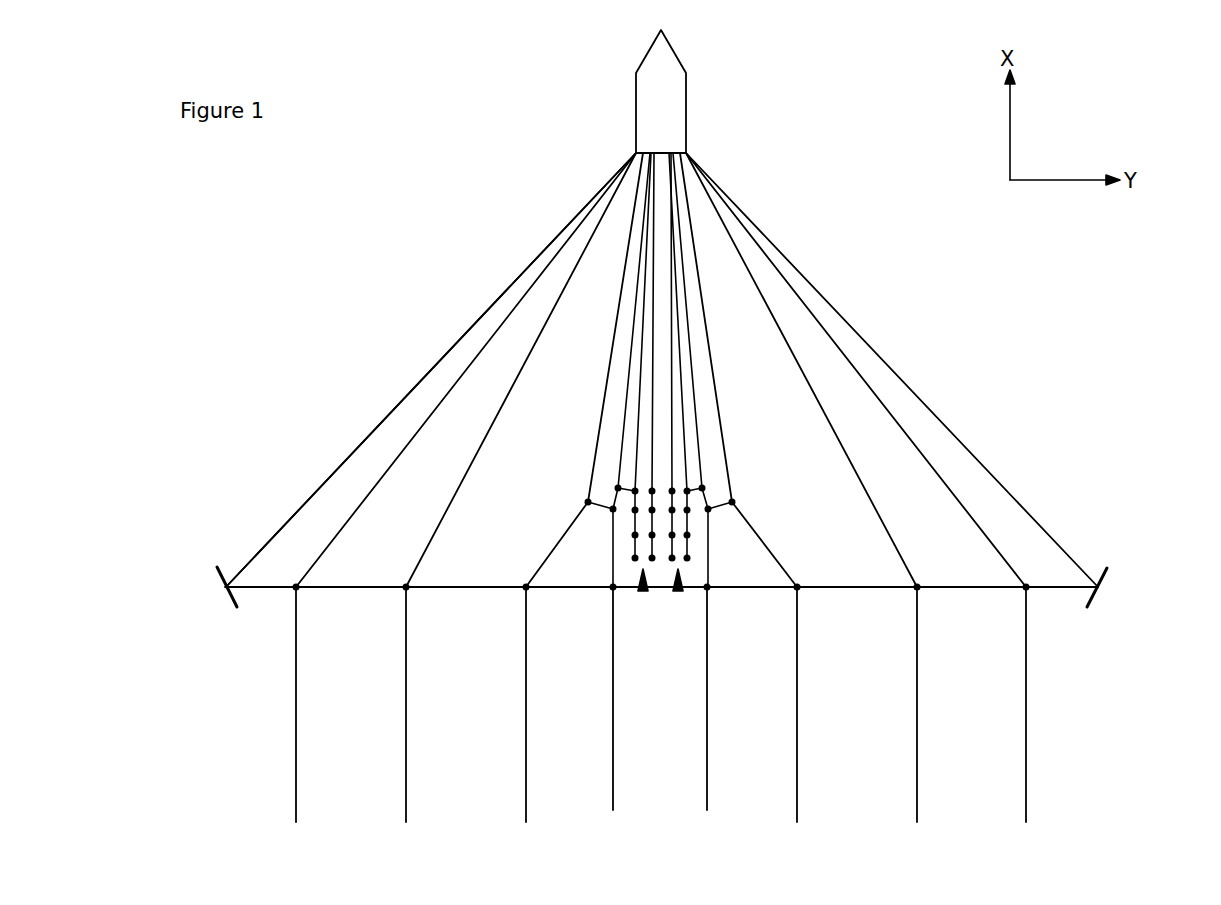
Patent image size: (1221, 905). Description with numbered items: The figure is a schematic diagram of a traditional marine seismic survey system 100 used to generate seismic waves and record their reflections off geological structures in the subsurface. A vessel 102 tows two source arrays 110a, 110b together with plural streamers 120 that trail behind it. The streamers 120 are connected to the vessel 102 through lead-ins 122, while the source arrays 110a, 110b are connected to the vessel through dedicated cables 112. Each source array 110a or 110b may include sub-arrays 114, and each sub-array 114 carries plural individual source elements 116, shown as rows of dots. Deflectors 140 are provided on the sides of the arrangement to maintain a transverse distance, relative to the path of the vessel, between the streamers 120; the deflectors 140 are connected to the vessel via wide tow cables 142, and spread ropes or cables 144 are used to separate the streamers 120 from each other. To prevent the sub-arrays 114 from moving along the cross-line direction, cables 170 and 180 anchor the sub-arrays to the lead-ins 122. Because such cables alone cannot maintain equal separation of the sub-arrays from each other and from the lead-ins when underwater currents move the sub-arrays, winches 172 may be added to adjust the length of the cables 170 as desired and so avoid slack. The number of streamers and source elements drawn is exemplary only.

The system 100 is at (576, 44).
The vessel 102 is at (670, 92).
The source array 110a is at (643, 585).
The source array 110b is at (678, 585).
The dedicated cable 112 is at (655, 318).
The sub-array 114 is at (688, 542).
The individual source element 116 is at (673, 489).
The streamer 120 is at (295, 717).
The lead-in 122 is at (457, 387).
The deflector 140 is at (220, 583).
The wide tow cable 142 is at (372, 430).
The spread rope 144 is at (465, 590).
The cable 170 is at (600, 506).
The winch 172 is at (585, 502).
The cable 180 is at (720, 507).